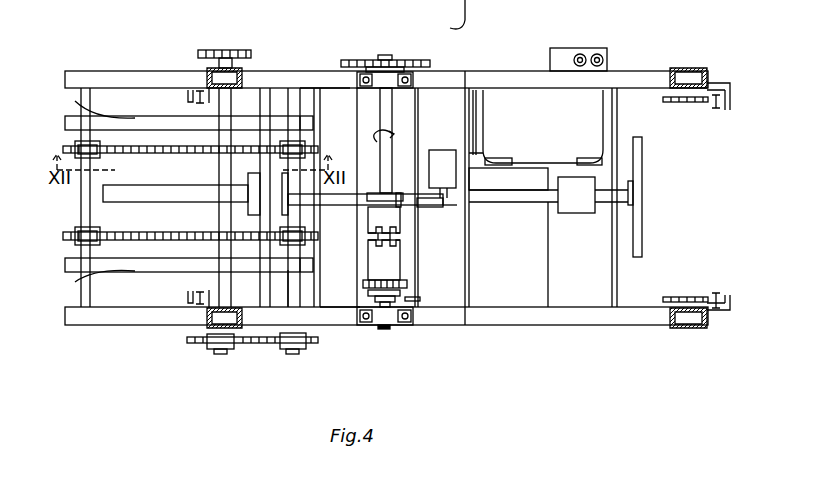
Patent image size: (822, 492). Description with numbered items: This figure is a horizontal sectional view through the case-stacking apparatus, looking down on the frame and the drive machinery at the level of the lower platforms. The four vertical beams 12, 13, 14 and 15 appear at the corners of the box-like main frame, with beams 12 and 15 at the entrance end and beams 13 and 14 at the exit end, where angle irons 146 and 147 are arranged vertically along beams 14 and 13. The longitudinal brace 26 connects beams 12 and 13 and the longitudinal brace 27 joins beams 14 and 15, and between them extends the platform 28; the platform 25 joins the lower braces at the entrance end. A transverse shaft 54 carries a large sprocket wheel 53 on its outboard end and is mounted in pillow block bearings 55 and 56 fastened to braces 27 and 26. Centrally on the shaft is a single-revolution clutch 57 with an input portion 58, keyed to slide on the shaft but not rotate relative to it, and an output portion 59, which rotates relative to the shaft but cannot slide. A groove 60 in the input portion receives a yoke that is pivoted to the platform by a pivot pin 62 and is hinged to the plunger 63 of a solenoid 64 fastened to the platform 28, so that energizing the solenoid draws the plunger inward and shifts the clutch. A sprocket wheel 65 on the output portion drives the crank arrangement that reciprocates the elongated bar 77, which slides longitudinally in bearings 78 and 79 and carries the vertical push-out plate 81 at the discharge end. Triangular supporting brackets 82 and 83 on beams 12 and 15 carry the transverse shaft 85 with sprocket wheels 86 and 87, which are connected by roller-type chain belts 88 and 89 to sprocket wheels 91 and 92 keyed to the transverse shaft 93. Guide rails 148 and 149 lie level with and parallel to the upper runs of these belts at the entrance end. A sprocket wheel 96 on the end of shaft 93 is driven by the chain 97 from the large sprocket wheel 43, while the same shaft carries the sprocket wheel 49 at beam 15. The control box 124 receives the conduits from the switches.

The vertical beam 12 is at (207, 313).
The vertical beam 13 is at (710, 323).
The vertical beam 14 is at (712, 75).
The vertical beam 15 is at (246, 79).
The platform 25 is at (312, 107).
The longitudinal brace 26 is at (337, 318).
The longitudinal brace 27 is at (325, 80).
The platform 28 is at (538, 287).
The large sprocket wheel 43 is at (210, 352).
The sprocket wheel 49 is at (215, 50).
The large sprocket wheel 53 is at (358, 62).
The shaft 54 is at (383, 126).
The pillow block bearing 55 is at (392, 85).
The pillow block bearing 56 is at (392, 320).
The single-revolution clutch 57 is at (397, 220).
The input portion 58 is at (369, 212).
The output portion 59 is at (393, 262).
The groove 60 is at (395, 195).
The pivot pin 62 is at (428, 208).
The plunger 63 is at (445, 201).
The solenoid 64 is at (440, 158).
The sprocket wheel 65 is at (407, 285).
The elongated bar 77 is at (340, 194).
The bearing 78 is at (248, 208).
The bearing 79 is at (578, 213).
The push-out plate 81 is at (642, 165).
The triangular supporting bracket 82 is at (103, 313).
The triangular supporting bracket 83 is at (140, 78).
The transverse shaft 85 is at (80, 95).
The sprocket wheel 86 is at (75, 147).
The sprocket wheel 87 is at (77, 230).
The roller-type chain belt 88 is at (147, 153).
The roller-type chain belt 89 is at (132, 233).
The sprocket wheel 91 is at (305, 147).
The sprocket wheel 92 is at (306, 243).
The transverse shaft 93 is at (295, 292).
The sprocket wheel 96 is at (302, 350).
The chain 97 is at (258, 345).
The control box 124 is at (598, 48).
The angle iron 146 is at (730, 100).
The angle iron 147 is at (727, 303).
The guide rail 148 is at (145, 125).
The guide rail 149 is at (148, 263).